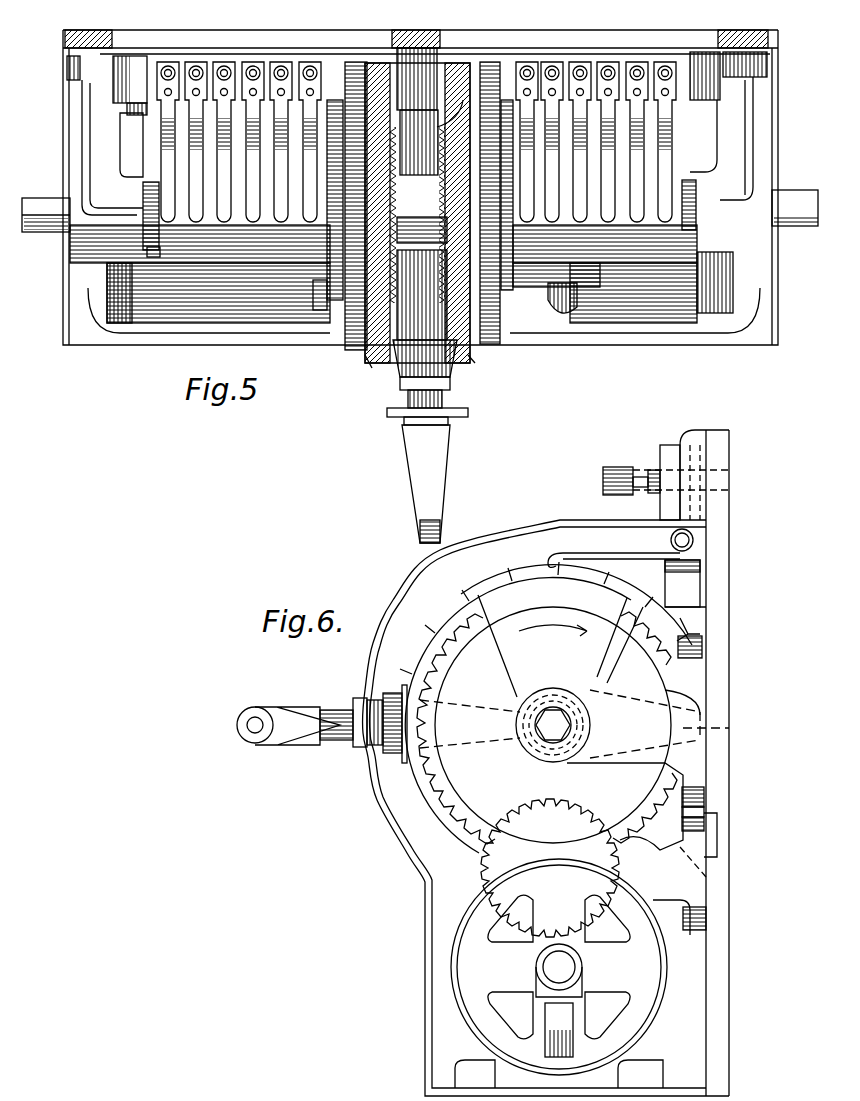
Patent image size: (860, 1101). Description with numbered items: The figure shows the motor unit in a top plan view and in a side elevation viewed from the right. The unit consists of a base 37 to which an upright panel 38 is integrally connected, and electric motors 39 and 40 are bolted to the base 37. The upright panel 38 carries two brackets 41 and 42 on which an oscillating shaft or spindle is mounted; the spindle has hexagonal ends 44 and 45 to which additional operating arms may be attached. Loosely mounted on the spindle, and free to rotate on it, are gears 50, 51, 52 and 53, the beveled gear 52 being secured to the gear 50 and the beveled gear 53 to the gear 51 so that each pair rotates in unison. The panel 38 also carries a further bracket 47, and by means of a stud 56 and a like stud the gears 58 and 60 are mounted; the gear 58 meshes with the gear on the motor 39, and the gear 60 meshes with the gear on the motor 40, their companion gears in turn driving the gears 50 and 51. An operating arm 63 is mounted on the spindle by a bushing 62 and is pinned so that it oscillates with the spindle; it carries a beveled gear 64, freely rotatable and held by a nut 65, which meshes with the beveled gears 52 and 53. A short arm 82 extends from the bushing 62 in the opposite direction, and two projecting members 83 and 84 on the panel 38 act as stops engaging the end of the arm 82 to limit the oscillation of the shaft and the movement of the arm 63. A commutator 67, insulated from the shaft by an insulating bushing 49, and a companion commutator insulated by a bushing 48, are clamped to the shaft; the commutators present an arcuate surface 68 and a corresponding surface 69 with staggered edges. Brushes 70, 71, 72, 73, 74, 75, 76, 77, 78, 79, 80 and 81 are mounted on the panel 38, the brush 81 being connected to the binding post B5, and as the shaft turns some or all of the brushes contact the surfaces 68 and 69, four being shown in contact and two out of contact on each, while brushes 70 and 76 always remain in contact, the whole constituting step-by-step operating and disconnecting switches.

In FIG. 5, the base 37 is at (776, 270).
In FIG. 6, the base 37 is at (440, 1088).
In FIG. 5, the upright panel 38 is at (745, 36).
In FIG. 6, the upright panel 38 is at (729, 601).
In FIG. 5, the electric motor 39 is at (160, 333).
In FIG. 5, the electric motor 40 is at (645, 326).
In FIG. 6, the electric motor 40 is at (655, 973).
In FIG. 5, the bracket 41 is at (72, 66).
In FIG. 5, the bracket 42 is at (768, 61).
In FIG. 6, the bracket 42 is at (665, 695).
In FIG. 5, the hexagonal end 44 is at (50, 232).
In FIG. 5, the hexagonal end 45 is at (797, 190).
In FIG. 6, the hexagonal end 45 is at (572, 726).
In FIG. 6, the bracket 47 is at (677, 884).
In FIG. 5, the insulating bushing 48 is at (143, 205).
In FIG. 5, the insulating bushing 49 is at (698, 196).
In FIG. 5, the gear 50 is at (355, 346).
In FIG. 5, the gear 51 is at (496, 346).
In FIG. 6, the gear 51 is at (437, 648).
In FIG. 5, the beveled gear 52 is at (378, 363).
In FIG. 5, the beveled gear 53 is at (474, 358).
In FIG. 6, the beveled gear 53 is at (433, 806).
In FIG. 5, the stud 56 is at (318, 310).
In FIG. 5, the gear 58 is at (335, 301).
In FIG. 5, the gear 60 is at (508, 282).
In FIG. 6, the gear 60 is at (483, 866).
In FIG. 5, the bushing 62 is at (417, 213).
In FIG. 5, the operating arm 63 is at (422, 503).
In FIG. 6, the operating arm 63 is at (262, 745).
In FIG. 5, the beveled gear 64 is at (452, 374).
In FIG. 6, the beveled gear 64 is at (400, 690).
In FIG. 5, the nut 65 is at (405, 424).
In FIG. 6, the nut 65 is at (360, 748).
In FIG. 5, the commutator 67 is at (548, 295).
In FIG. 6, the commutator 67 is at (510, 670).
In FIG. 5, the arcuate surface 68 is at (147, 258).
In FIG. 5, the arcuate surface 69 is at (672, 158).
In FIG. 6, the arcuate surface 69 is at (500, 590).
In FIG. 5, the brush 70 is at (310, 142).
In FIG. 5, the brush 71 is at (281, 142).
In FIG. 5, the brush 72 is at (253, 142).
In FIG. 5, the brush 73 is at (224, 142).
In FIG. 5, the brush 74 is at (196, 142).
In FIG. 5, the brush 75 is at (168, 142).
In FIG. 5, the brush 76 is at (527, 142).
In FIG. 5, the brush 77 is at (552, 142).
In FIG. 5, the brush 78 is at (580, 142).
In FIG. 5, the brush 79 is at (608, 142).
In FIG. 5, the brush 80 is at (637, 142).
In FIG. 5, the brush 81 is at (665, 142).
In FIG. 6, the brush 81 is at (628, 559).
In FIG. 5, the short arm 82 is at (463, 100).
In FIG. 6, the short arm 82 is at (729, 729).
In FIG. 6, the projecting member 83 is at (685, 823).
In FIG. 5, the projecting member 84 is at (418, 30).
In FIG. 6, the projecting member 84 is at (690, 612).
In FIG. 6, the binding post B5 is at (622, 460).